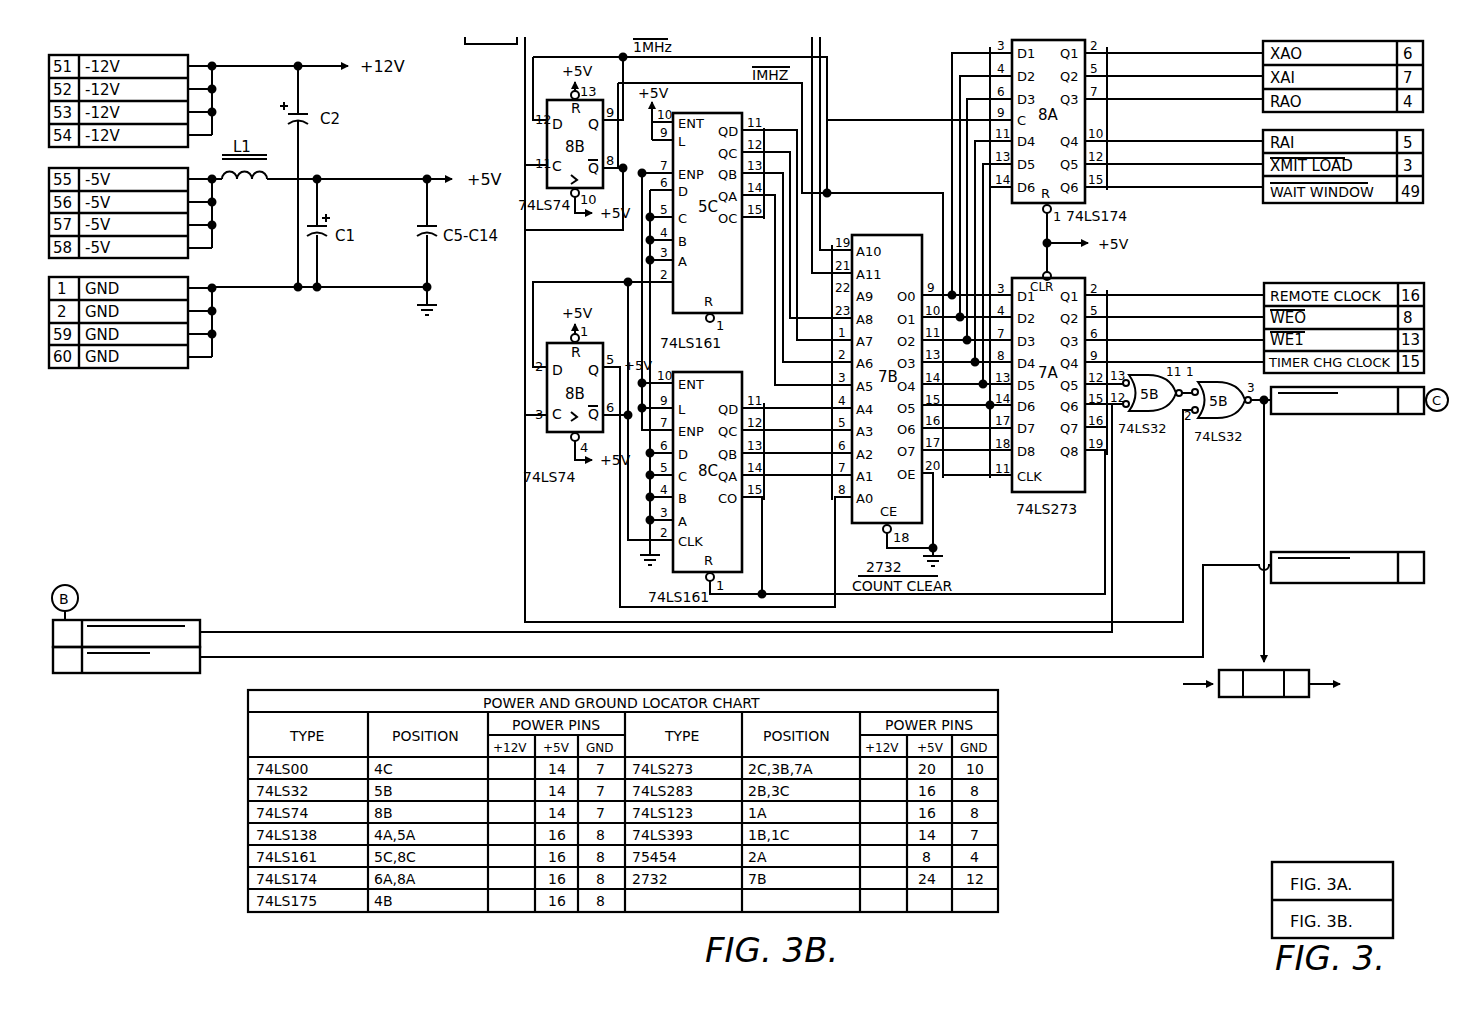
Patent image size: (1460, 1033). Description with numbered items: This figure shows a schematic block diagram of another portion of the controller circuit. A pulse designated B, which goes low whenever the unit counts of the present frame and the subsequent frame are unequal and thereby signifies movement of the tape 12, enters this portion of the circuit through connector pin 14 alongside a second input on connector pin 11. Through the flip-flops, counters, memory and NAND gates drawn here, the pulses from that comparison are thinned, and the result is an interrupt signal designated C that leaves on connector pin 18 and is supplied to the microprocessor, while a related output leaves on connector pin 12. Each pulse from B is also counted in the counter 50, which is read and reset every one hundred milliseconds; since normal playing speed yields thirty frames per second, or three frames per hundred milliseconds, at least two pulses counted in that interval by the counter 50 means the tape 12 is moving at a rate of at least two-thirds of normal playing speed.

The counter 50 is at (1290, 697).
The timer change connector pin 14 is at (126, 633).
The BDI here connector pin 11 is at (126, 660).
The BVH interrupt connector pin 18 is at (1347, 400).
The tape 12 is at (1347, 567).